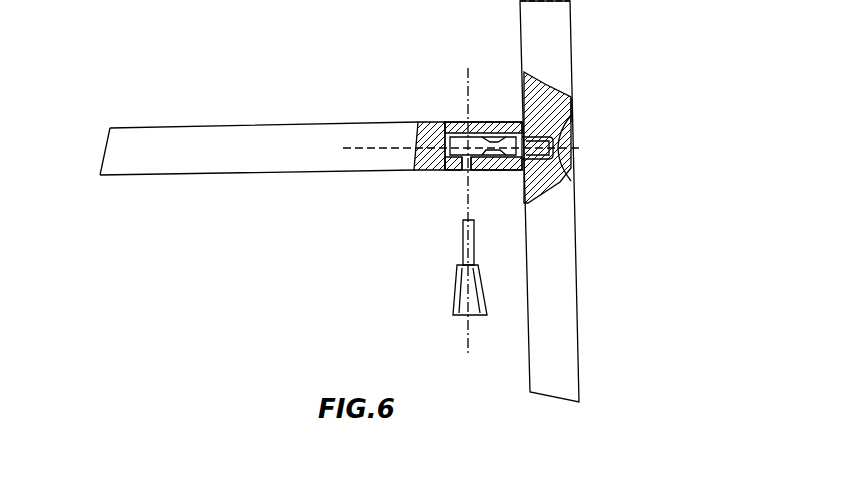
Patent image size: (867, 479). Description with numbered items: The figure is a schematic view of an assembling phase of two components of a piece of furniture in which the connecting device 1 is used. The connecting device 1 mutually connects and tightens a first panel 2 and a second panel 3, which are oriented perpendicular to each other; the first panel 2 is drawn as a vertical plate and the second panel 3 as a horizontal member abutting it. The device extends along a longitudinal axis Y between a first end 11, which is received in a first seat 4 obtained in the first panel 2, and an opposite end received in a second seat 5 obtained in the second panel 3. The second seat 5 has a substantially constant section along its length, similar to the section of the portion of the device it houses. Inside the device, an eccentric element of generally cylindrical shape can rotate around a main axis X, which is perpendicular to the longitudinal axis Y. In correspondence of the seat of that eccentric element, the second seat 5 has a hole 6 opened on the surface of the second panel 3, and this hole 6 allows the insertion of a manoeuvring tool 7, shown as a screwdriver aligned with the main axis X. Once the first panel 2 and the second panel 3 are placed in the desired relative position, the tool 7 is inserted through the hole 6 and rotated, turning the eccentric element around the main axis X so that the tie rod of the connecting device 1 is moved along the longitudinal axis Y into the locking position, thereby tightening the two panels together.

The connecting device 1 is at (506, 122).
The first panel 2 is at (574, 45).
The second panel 3 is at (292, 124).
The first seat 4 is at (563, 182).
The second seat 5 is at (445, 122).
The hole 6 is at (466, 172).
The manoeuvring tool 7 is at (455, 292).
The first end 11 is at (572, 110).
The main axis X is at (468, 90).
The longitudinal axis Y is at (357, 147).